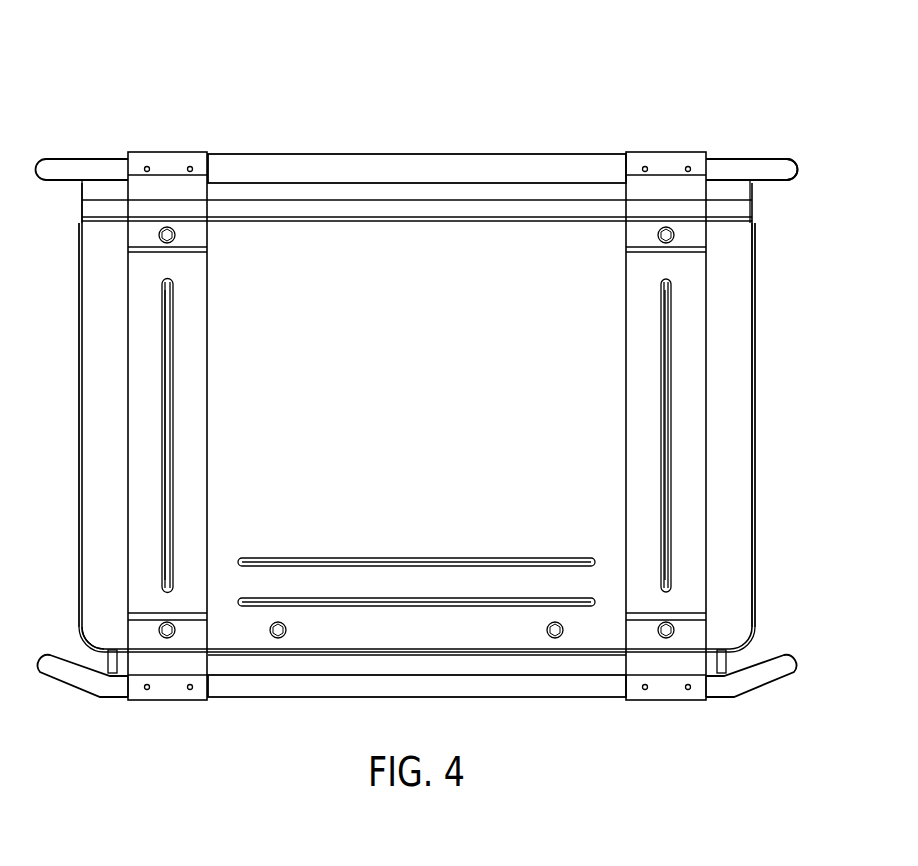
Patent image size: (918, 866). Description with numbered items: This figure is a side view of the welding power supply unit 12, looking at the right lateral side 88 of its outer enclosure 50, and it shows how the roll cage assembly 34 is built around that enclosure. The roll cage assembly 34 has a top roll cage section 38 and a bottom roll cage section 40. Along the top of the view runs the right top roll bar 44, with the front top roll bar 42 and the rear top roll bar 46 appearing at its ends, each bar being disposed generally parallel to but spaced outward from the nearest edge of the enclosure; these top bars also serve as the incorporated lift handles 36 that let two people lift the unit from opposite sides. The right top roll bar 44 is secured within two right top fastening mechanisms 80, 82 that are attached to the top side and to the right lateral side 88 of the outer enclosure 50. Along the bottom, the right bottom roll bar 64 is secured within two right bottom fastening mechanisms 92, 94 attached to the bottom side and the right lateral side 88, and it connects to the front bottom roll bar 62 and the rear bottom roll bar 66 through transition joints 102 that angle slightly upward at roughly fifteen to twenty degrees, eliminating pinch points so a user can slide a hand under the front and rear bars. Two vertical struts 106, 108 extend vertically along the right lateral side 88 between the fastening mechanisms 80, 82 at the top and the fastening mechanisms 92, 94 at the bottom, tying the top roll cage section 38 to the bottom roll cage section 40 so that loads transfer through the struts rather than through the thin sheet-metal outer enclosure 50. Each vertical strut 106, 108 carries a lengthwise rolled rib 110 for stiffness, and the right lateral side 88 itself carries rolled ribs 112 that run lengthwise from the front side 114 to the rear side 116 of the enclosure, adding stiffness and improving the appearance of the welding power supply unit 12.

The welding power supply unit 12 is at (706, 50).
The roll cage assembly 34 is at (776, 196).
The lift handles 36 is at (446, 162).
The top roll cage section 38 is at (50, 188).
The bottom roll cage section 40 is at (37, 650).
The front top roll bar 42 is at (52, 160).
The right top roll bar 44 is at (729, 158).
The rear top roll bar 46 is at (795, 158).
The outer enclosure 50 is at (745, 368).
The front bottom roll bar 62 is at (45, 667).
The right bottom roll bar 64 is at (345, 692).
The rear bottom roll bar 66 is at (792, 668).
The right top fastening mechanism 80 is at (167, 203).
The right top fastening mechanism 82 is at (656, 203).
The right lateral side 88 is at (434, 410).
The right bottom fastening mechanism 92 is at (167, 660).
The right bottom fastening mechanism 94 is at (660, 660).
The transition joints 102 is at (82, 680).
The vertical strut 106 is at (200, 357).
The vertical strut 108 is at (633, 326).
The rolled rib 110 is at (168, 487).
The rolled ribs 112 is at (397, 603).
The front side 114 is at (66, 413).
The rear side 116 is at (770, 433).